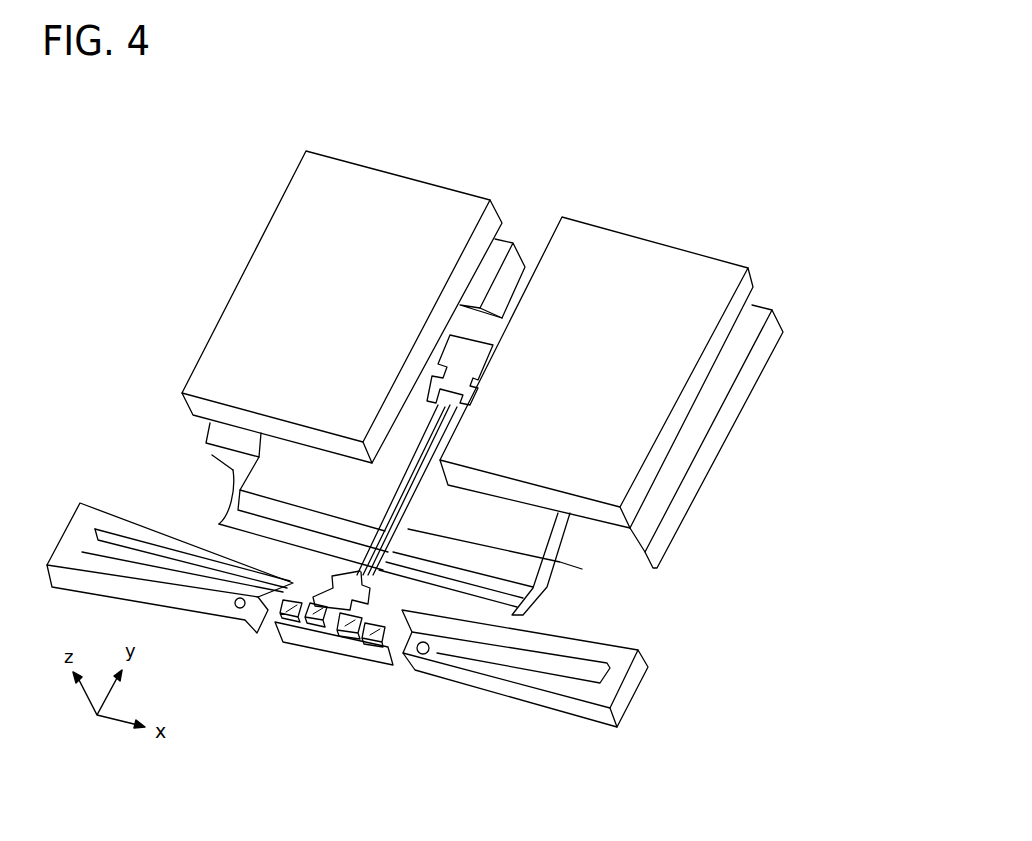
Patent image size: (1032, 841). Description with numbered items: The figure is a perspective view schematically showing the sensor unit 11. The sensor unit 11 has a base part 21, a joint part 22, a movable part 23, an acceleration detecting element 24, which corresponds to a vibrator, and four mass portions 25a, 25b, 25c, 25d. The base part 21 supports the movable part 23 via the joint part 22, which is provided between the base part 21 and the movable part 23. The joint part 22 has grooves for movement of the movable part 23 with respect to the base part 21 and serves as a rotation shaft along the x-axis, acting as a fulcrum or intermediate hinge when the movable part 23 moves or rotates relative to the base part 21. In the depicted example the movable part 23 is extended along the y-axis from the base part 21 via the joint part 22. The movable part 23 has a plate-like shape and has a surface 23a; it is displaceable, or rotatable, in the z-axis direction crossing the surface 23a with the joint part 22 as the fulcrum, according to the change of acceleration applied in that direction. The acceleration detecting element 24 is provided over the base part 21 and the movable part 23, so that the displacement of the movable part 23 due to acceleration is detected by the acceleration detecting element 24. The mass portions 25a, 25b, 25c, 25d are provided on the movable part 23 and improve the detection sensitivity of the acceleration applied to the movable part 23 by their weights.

The sensor unit 11 is at (425, 90).
The base part 21 is at (278, 565).
The joint part 22 is at (530, 592).
The movable part 23 is at (233, 468).
The surface 23a is at (302, 468).
The acceleration detecting element 24 is at (428, 500).
The mass portion 25a is at (402, 172).
The mass portion 25b is at (520, 242).
The mass portion 25c is at (650, 233).
The mass portion 25d is at (782, 313).